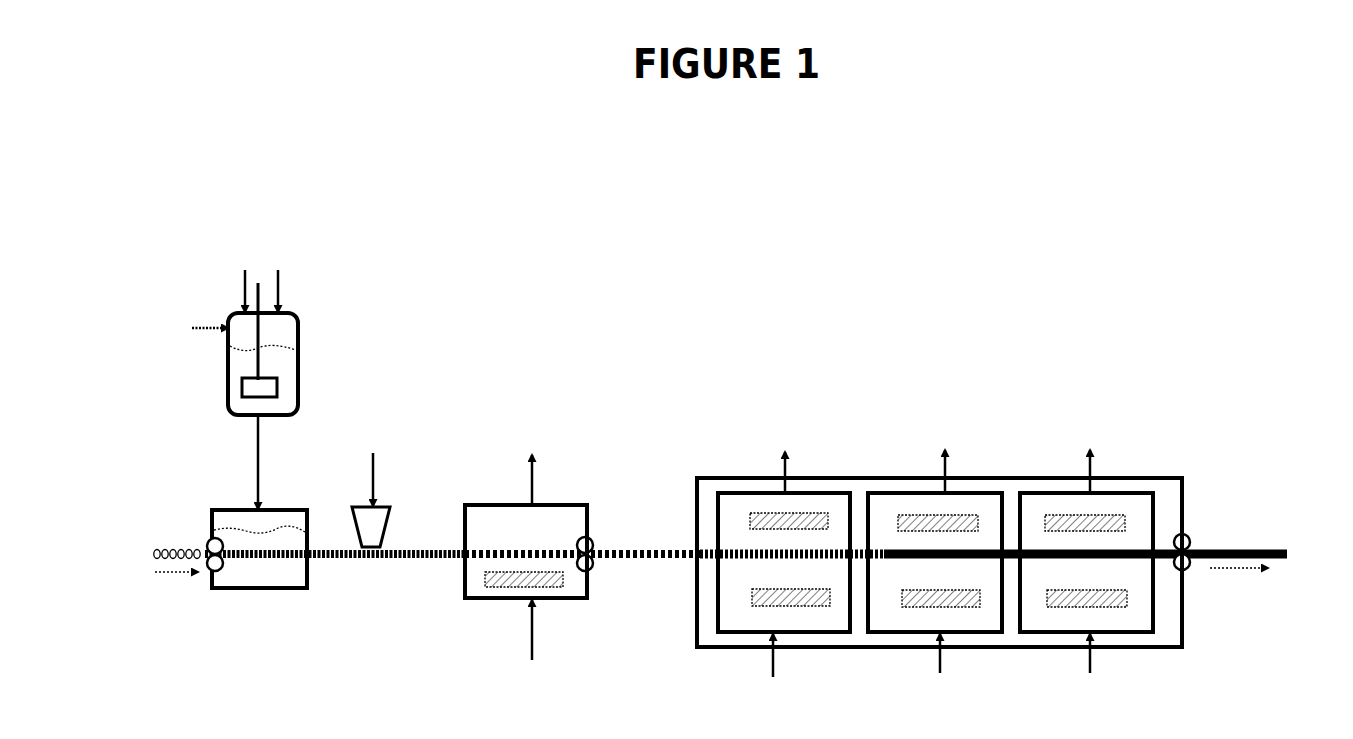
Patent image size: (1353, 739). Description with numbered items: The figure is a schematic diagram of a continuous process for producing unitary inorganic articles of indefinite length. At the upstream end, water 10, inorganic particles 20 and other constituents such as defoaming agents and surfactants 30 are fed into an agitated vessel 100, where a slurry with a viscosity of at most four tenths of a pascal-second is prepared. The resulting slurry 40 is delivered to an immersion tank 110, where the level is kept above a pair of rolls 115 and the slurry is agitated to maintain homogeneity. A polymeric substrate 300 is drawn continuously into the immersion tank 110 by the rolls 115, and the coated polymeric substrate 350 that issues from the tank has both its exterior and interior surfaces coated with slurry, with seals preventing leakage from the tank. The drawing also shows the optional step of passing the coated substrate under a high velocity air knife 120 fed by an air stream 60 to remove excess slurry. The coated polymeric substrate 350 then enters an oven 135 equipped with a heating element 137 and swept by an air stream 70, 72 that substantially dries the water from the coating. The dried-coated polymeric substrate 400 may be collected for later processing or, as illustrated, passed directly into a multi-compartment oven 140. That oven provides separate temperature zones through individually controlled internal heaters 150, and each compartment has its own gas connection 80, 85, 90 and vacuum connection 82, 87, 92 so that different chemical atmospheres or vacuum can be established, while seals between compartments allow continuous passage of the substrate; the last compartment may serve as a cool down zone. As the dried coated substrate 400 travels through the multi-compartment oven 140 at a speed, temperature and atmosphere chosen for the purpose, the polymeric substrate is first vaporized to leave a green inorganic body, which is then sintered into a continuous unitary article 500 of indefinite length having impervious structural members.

The water 10 is at (188, 330).
The inorganic particles 20 is at (230, 273).
The other constituents 30 is at (286, 273).
The slurry 40 is at (262, 482).
The air stream 60 is at (373, 470).
The air stream 70 is at (533, 640).
The air stream 72 is at (533, 465).
The gas connection 80 is at (784, 601).
The vacuum connection 82 is at (786, 455).
The gas connection 85 is at (935, 600).
The vacuum connection 87 is at (949, 454).
The gas connection 90 is at (1086, 600).
The vacuum connection 92 is at (1085, 454).
The agitated vessel 100 is at (300, 365).
The immersion tank 110 is at (247, 590).
The rolls 115 is at (208, 543).
The high velocity air knife 120 is at (390, 525).
The oven 135 is at (500, 508).
The heating element 137 is at (547, 588).
The multi-compartment oven 140 is at (863, 649).
The internal heaters 150 is at (763, 520).
The polymeric substrate 300 is at (152, 553).
The coated polymeric substrate 350 is at (320, 560).
The dried-coated polymeric substrate 400 is at (683, 557).
The continuous unitary article 500 is at (1275, 557).